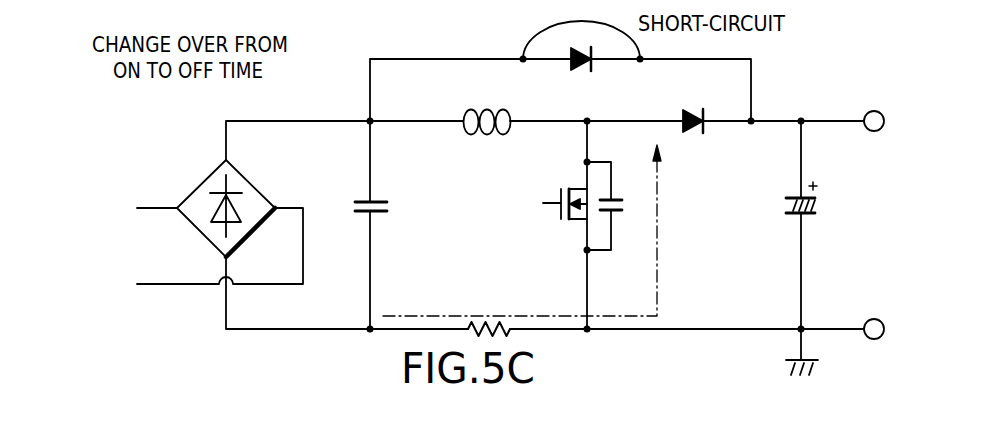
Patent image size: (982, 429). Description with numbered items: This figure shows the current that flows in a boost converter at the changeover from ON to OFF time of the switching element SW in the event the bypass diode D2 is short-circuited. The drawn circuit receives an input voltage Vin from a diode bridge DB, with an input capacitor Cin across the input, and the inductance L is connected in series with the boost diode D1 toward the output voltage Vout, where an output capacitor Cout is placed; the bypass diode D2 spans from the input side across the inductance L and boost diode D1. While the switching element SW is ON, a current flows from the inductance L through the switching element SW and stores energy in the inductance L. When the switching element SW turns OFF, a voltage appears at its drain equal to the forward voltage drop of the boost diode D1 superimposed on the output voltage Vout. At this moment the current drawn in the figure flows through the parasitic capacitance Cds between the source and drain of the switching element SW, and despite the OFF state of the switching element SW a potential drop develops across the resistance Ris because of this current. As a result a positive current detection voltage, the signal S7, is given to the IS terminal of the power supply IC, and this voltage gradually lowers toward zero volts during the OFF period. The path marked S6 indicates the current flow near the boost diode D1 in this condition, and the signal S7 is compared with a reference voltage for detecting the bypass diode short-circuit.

The input voltage line Vin is at (545, 127).
The diode bridge rectifier DB is at (220, 222).
The input capacitor Cin is at (354, 225).
The inductance L is at (486, 108).
The bypass diode D2 is at (581, 58).
The current path segment S6 is at (622, 121).
The boost diode D1 is at (695, 107).
The output voltage Vout is at (832, 107).
The switching element SW is at (561, 225).
The parasitic capacitance Cds is at (617, 206).
The output capacitor Cout is at (818, 225).
The resistance Ris is at (489, 312).
The signal S7 is at (424, 329).